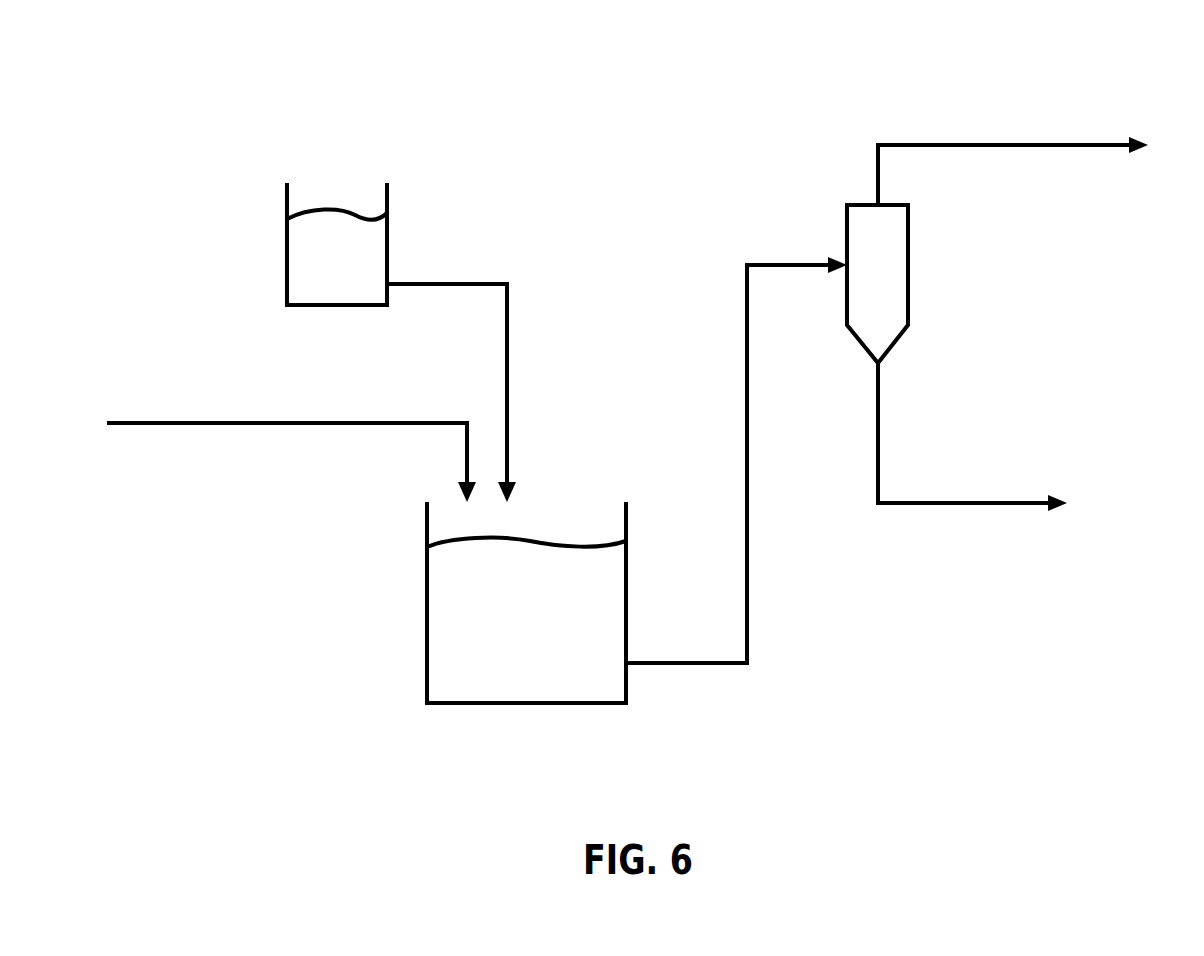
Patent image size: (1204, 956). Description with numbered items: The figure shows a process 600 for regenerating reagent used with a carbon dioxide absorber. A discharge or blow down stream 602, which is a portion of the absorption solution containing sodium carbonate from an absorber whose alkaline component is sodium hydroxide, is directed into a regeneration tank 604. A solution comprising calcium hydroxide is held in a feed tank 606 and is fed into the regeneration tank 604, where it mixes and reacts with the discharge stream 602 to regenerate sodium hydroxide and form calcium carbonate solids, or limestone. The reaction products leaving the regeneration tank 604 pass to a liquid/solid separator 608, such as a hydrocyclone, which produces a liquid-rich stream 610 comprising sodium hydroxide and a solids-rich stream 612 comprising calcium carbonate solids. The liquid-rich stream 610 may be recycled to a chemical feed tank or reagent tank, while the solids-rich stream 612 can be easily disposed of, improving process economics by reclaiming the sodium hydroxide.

The reagent regeneration process 600 is at (303, 752).
The discharge or blow down stream 602 is at (293, 425).
The regeneration tank 604 is at (565, 705).
The feed tank 606 is at (287, 267).
The liquid/solid separator 608 is at (908, 283).
The liquid-rich stream 610 is at (965, 145).
The solids-rich stream 612 is at (967, 503).